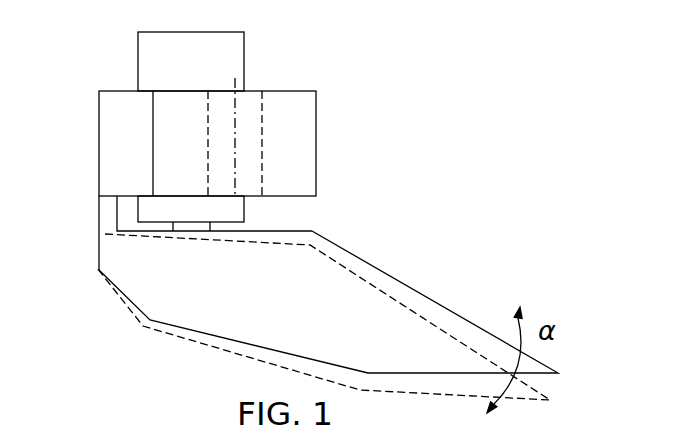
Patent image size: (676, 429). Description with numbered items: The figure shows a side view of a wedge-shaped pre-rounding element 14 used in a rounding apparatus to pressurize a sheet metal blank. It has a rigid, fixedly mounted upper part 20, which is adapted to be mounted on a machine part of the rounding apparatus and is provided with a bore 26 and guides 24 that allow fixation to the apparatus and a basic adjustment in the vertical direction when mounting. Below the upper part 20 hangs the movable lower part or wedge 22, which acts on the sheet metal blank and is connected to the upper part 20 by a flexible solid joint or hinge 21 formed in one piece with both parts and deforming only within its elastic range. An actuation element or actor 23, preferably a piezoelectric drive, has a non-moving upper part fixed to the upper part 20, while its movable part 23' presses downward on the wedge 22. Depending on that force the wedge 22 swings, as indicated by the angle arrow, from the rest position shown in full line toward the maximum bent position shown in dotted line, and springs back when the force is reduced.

The pre-rounding element 14 is at (106, 75).
The upper part 20 is at (122, 140).
The joint or hinge 21 is at (105, 215).
The lower part (wedge) 22 is at (163, 298).
The actuation element (actor) 23 is at (212, 50).
The movable part of the actor 23' is at (197, 253).
The guides 24 is at (168, 134).
The bore 26 is at (252, 96).